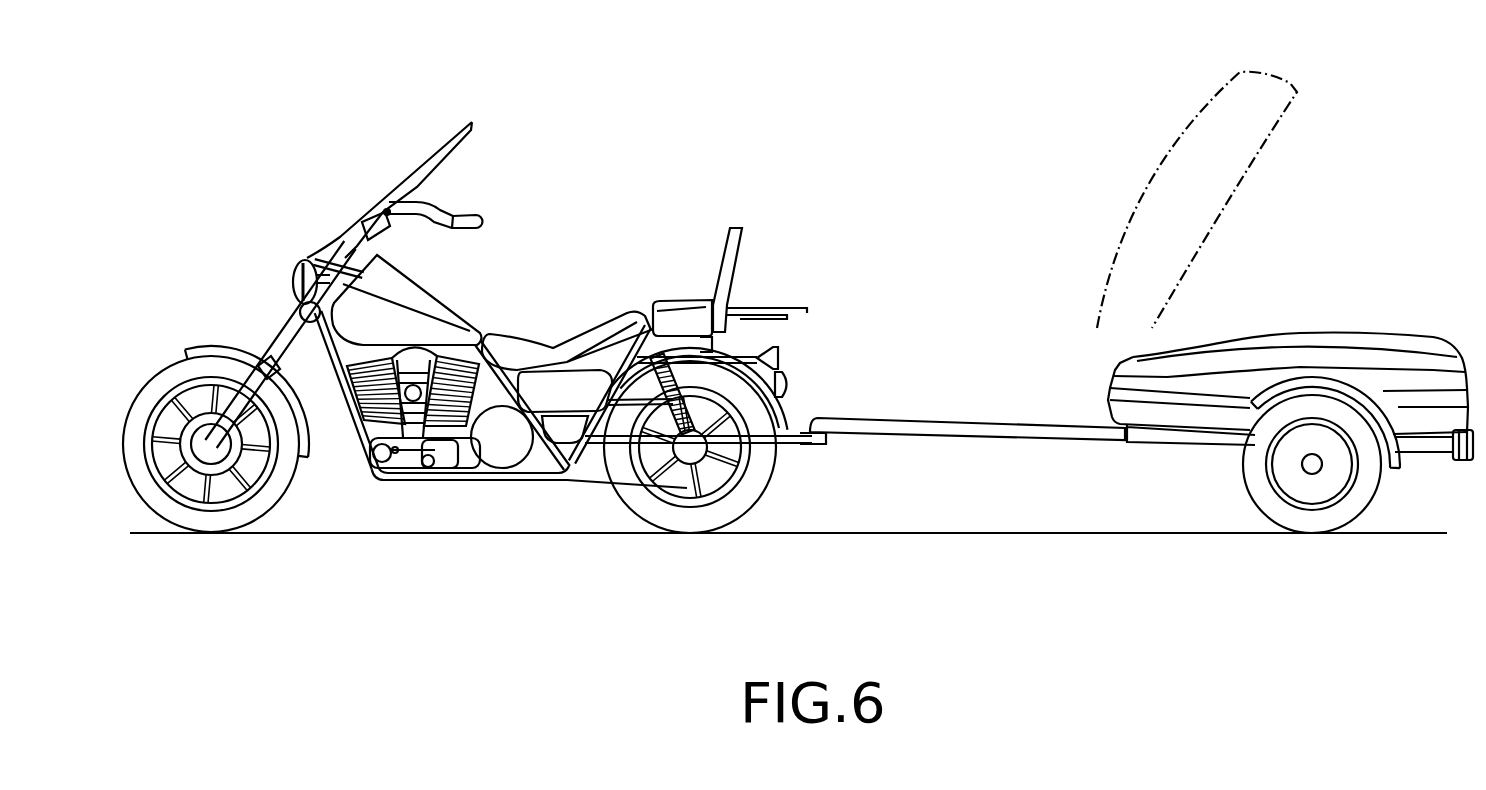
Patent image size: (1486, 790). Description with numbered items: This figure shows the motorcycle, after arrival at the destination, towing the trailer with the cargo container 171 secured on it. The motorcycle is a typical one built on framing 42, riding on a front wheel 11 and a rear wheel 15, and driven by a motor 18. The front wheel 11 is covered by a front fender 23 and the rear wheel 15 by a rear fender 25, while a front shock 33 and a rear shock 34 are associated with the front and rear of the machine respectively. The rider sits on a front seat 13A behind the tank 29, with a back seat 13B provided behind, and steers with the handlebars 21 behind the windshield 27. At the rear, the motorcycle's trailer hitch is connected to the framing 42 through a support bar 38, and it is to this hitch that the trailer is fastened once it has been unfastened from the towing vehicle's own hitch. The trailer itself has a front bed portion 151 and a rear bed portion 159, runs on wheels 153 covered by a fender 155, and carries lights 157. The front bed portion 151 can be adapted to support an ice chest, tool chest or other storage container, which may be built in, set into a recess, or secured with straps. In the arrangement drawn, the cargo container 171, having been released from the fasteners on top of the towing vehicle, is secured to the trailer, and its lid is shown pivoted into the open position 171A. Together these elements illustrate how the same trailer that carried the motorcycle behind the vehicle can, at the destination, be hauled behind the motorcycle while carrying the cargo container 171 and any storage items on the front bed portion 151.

The front wheel 11 is at (155, 388).
The front fender 23 is at (220, 348).
The front shock 33 is at (282, 371).
The windshield 27 is at (352, 220).
The handlebars 21 is at (430, 210).
The tank 29 is at (395, 313).
The motor 18 is at (362, 428).
The framing 42 is at (513, 478).
The front seat 13A is at (565, 355).
The back seat 13B is at (730, 245).
The rear fender 25 is at (762, 378).
The rear shock 34 is at (680, 447).
The rear wheel 15 is at (747, 497).
The support bar 38 is at (814, 445).
The front bed portion 151 is at (920, 425).
The rear bed portion 159 is at (1163, 437).
The wheels 153 is at (1260, 492).
The fender 155 is at (1397, 470).
The lights 157 is at (1463, 460).
The cargo container 171 is at (1360, 353).
The open position 171A is at (1253, 93).